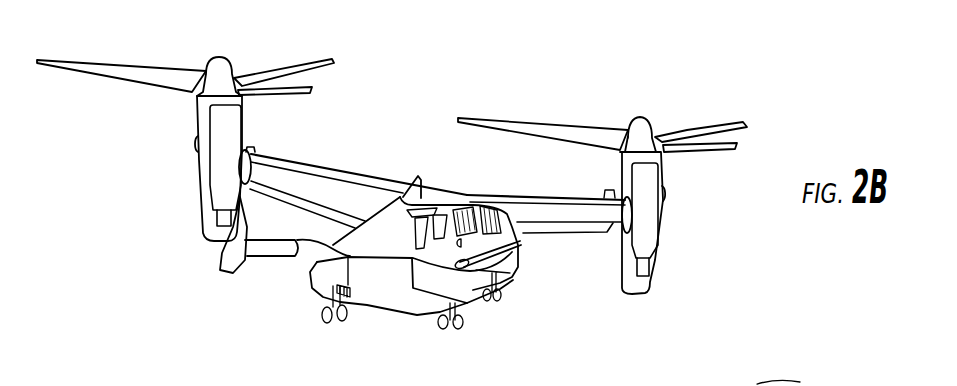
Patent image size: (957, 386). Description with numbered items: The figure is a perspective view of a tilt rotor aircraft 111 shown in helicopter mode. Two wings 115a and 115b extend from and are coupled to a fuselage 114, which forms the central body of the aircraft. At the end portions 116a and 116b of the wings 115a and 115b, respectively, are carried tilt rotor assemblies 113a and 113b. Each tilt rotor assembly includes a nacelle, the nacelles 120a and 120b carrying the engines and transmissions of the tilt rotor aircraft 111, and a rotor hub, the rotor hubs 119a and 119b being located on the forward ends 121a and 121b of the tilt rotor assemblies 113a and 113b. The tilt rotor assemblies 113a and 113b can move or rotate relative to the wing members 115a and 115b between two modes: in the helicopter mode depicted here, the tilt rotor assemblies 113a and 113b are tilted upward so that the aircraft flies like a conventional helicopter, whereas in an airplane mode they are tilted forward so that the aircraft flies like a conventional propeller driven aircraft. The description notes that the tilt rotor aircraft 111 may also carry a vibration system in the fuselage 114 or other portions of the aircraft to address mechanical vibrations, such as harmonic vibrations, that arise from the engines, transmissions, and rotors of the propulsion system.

The tilt rotor aircraft 111 is at (285, 292).
The tilt rotor assembly 113a is at (672, 229).
The tilt rotor assembly 113b is at (180, 189).
The fuselage 114 is at (409, 309).
The wing 115a is at (540, 195).
The wing 115b is at (320, 167).
The end portion of wing 116a is at (605, 253).
The end portion of wing 116b is at (262, 142).
The rotor hub 119a is at (654, 128).
The rotor hub 119b is at (213, 67).
The nacelle 120a is at (653, 277).
The nacelle 120b is at (202, 235).
The forward end of tilt rotor assembly 121a is at (660, 160).
The forward end of tilt rotor assembly 121b is at (200, 102).